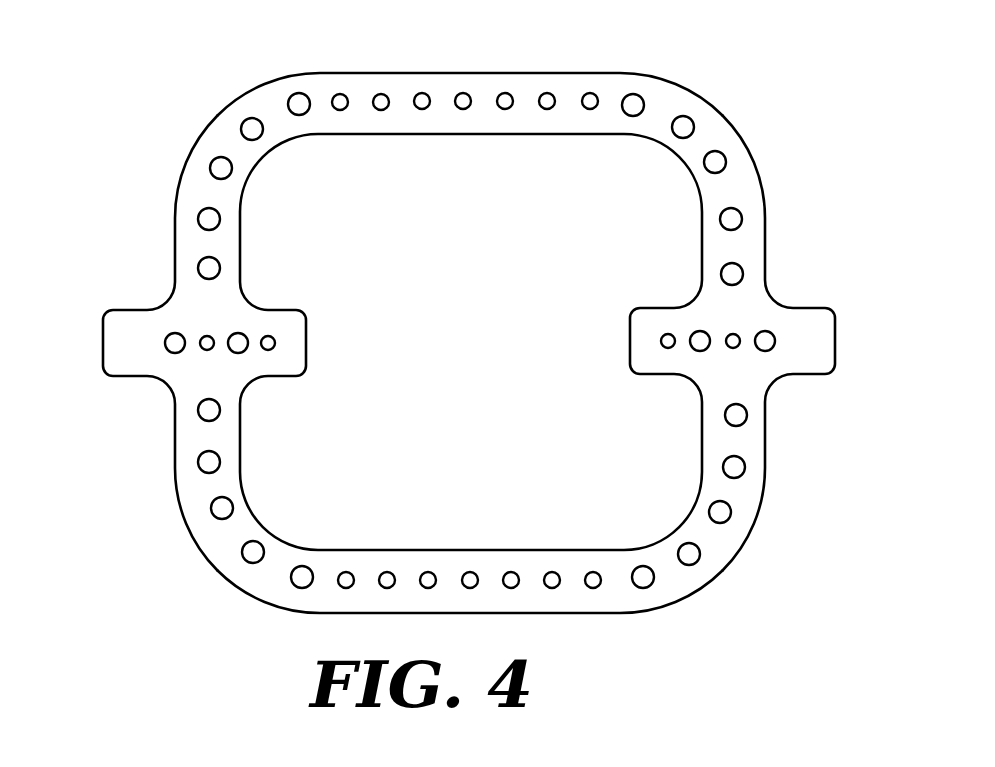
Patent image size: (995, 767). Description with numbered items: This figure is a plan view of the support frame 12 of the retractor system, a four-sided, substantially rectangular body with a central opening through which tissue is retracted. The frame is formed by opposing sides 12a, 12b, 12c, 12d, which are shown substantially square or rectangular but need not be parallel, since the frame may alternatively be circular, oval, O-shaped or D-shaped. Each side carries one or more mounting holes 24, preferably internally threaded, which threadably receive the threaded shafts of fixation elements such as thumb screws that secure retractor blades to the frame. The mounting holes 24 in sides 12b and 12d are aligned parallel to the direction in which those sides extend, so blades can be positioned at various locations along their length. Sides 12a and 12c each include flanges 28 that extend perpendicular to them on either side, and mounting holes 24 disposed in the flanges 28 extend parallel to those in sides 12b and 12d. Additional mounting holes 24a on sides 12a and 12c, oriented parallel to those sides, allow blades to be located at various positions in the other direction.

The support frame 12 is at (449, 342).
The side of frame 12a is at (172, 414).
The side of frame 12b is at (415, 72).
The side of frame 12c is at (767, 488).
The side of frame 12d is at (294, 608).
The mounting holes 24 is at (547, 100).
The additional mounting holes 24a is at (732, 220).
The flanges 28 is at (132, 345).